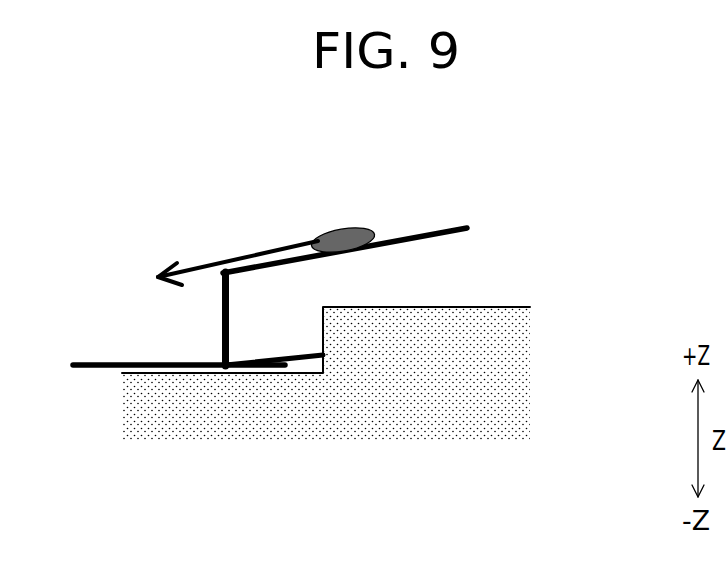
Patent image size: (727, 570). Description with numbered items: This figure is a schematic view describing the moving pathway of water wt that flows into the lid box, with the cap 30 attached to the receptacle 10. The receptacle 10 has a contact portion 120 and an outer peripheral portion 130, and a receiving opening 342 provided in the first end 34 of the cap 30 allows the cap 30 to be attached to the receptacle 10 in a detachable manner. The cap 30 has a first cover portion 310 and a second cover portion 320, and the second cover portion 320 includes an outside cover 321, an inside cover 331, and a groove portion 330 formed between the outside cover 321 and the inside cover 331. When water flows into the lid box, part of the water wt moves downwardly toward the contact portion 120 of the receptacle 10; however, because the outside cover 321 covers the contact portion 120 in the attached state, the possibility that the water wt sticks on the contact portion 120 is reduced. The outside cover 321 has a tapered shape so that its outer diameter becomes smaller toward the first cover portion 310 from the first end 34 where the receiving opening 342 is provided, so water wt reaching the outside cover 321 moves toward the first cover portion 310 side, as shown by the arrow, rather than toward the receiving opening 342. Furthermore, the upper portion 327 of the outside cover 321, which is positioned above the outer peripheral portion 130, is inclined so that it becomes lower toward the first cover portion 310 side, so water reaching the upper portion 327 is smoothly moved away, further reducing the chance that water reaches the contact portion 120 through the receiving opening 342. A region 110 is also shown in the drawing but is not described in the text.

The receptacle 10 is at (338, 388).
The cap 30 is at (295, 240).
The first surface of base 110 is at (178, 412).
The contact portion 120 is at (305, 352).
The outer peripheral portion 130 is at (440, 393).
The first cover portion 310 is at (88, 362).
The second cover portion 320 is at (385, 193).
The outside cover 321 is at (349, 193).
The upper portion 327 is at (398, 238).
The groove portion 330 is at (228, 319).
The inside cover 331 is at (262, 328).
The receiving opening 342 is at (536, 235).
The first end 34 is at (467, 270).
The water wt is at (350, 229).